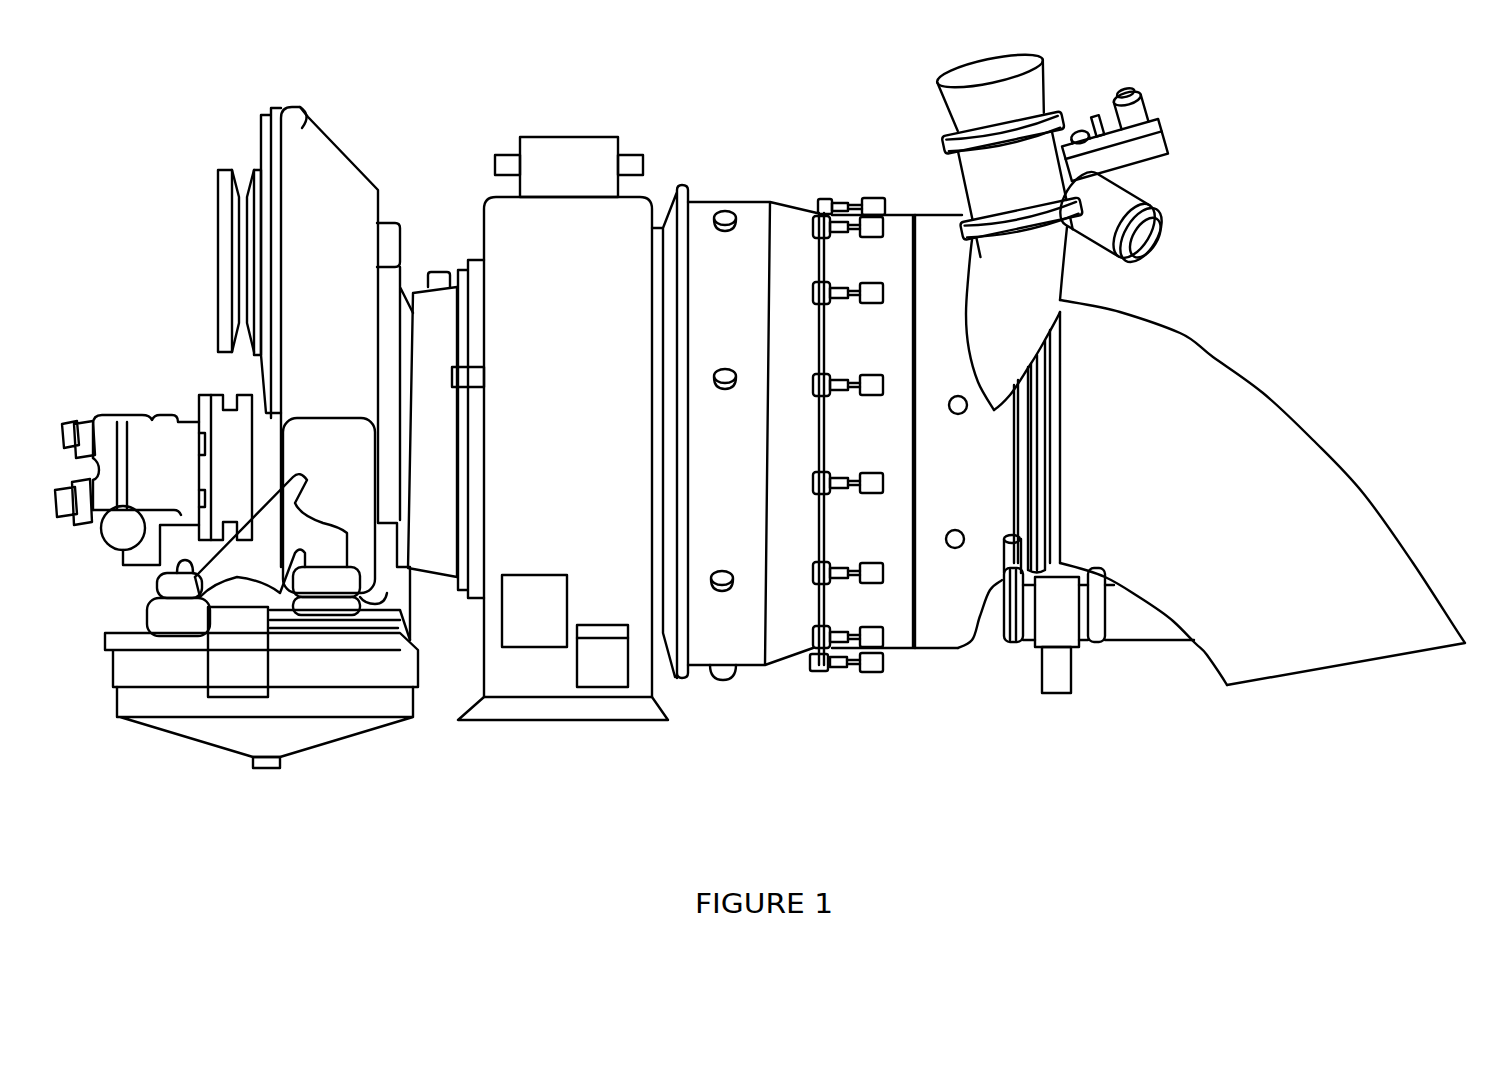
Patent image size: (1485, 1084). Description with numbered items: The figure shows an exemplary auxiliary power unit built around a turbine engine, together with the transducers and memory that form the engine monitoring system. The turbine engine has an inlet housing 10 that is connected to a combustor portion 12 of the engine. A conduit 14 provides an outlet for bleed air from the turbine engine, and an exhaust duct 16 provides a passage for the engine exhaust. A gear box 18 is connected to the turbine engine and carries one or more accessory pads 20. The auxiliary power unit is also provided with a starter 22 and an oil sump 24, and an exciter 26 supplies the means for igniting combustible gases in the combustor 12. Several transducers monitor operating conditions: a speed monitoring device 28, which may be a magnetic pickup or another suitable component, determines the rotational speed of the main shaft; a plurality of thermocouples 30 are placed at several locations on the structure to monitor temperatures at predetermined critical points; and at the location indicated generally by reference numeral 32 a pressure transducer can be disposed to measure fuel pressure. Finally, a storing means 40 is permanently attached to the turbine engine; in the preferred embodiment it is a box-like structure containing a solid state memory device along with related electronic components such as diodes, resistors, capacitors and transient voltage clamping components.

The inlet housing 10 is at (637, 215).
The combustor portion 12 is at (963, 633).
The conduit 14 is at (1025, 93).
The exhaust duct 16 is at (1198, 362).
The gear box 18 is at (325, 165).
The accessory pad 20 is at (218, 220).
The starter 22 is at (150, 433).
The oil sump 24 is at (300, 738).
The exciter 26 is at (555, 148).
The speed monitoring device 28 is at (433, 270).
The thermocouples 30 is at (966, 408).
The pressure transducer location 32 is at (255, 427).
The storing means 40 is at (617, 668).